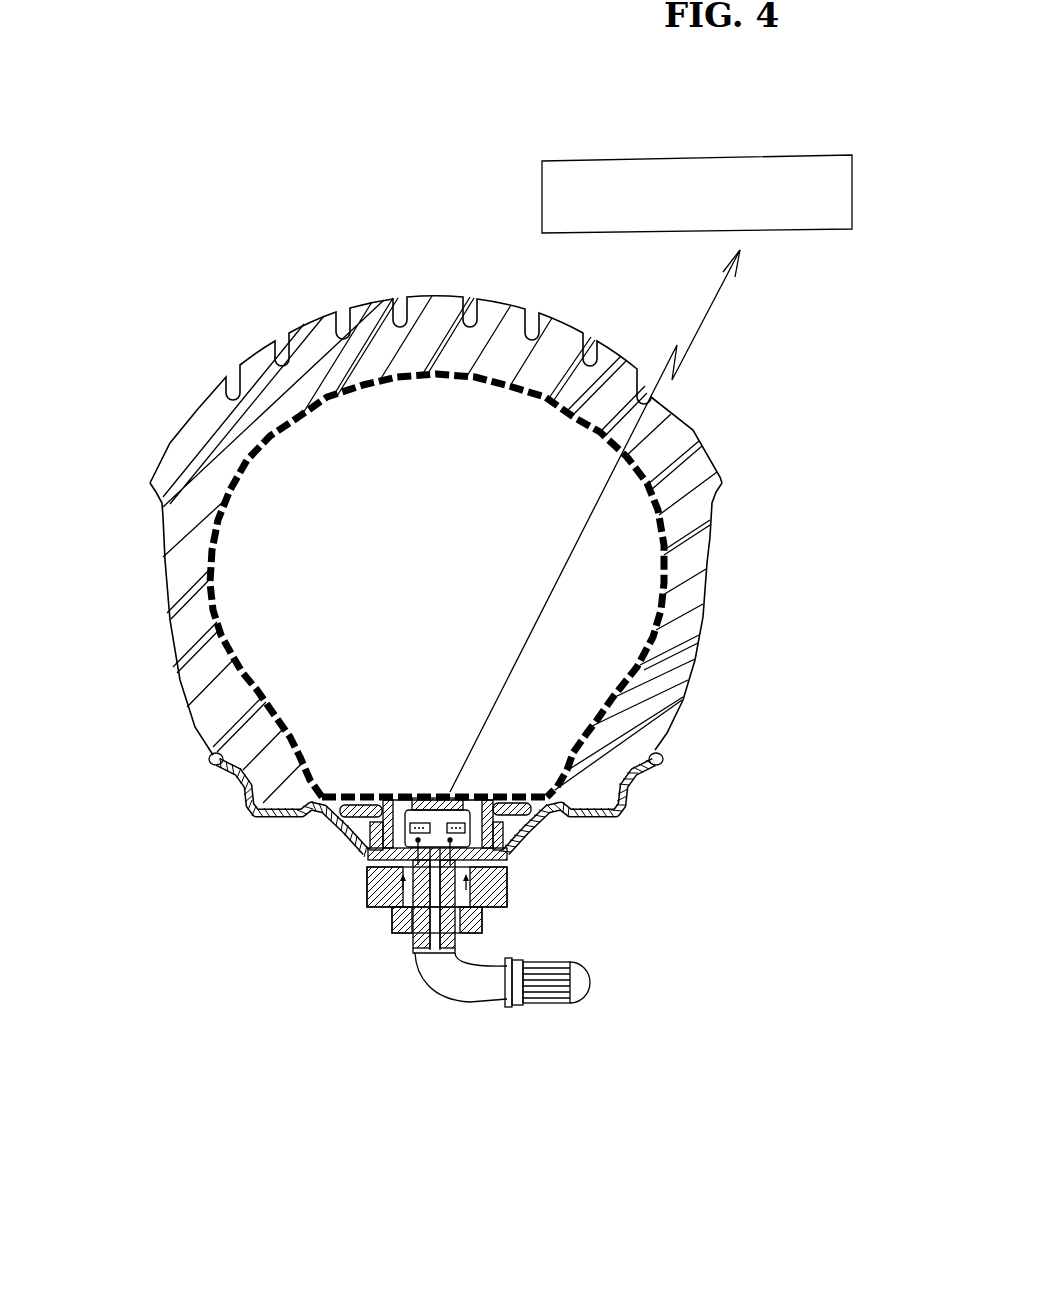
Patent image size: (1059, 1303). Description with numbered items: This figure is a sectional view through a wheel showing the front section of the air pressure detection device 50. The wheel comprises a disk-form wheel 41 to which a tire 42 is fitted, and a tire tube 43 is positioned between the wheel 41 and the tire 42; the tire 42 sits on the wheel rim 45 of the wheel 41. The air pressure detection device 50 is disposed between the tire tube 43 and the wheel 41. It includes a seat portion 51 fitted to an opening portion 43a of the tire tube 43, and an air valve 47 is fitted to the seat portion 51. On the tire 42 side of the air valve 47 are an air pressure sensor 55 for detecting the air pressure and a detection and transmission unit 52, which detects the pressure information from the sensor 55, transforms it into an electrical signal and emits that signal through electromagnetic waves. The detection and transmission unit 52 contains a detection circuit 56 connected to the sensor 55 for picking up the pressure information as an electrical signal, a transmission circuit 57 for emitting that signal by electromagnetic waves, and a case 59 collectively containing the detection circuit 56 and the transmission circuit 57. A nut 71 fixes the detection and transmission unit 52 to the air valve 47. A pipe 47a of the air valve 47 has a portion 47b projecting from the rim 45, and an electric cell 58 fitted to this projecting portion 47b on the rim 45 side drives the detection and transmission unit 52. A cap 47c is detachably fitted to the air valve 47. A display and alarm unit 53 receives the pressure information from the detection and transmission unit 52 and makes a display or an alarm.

The disk-form wheel 41 is at (635, 805).
The tire 42 is at (263, 397).
The tire tube 43 is at (385, 380).
The opening portion 43a is at (477, 793).
The wheel rim 45 is at (645, 770).
The air valve 47 is at (487, 1005).
The pipe 47a is at (447, 798).
The portion projecting from the rim 47b is at (435, 972).
The cap 47c is at (590, 993).
The air pressure detection device 50 is at (208, 250).
The seat portion 51 is at (503, 793).
The detection and transmission unit 52 is at (397, 790).
The display and alarm unit 53 is at (573, 236).
The air pressure sensor 55 is at (437, 800).
The detection circuit 56 is at (362, 848).
The transmission circuit 57 is at (510, 823).
The electric cell 58 is at (508, 887).
The case 59 is at (517, 850).
The nut 71 is at (370, 935).